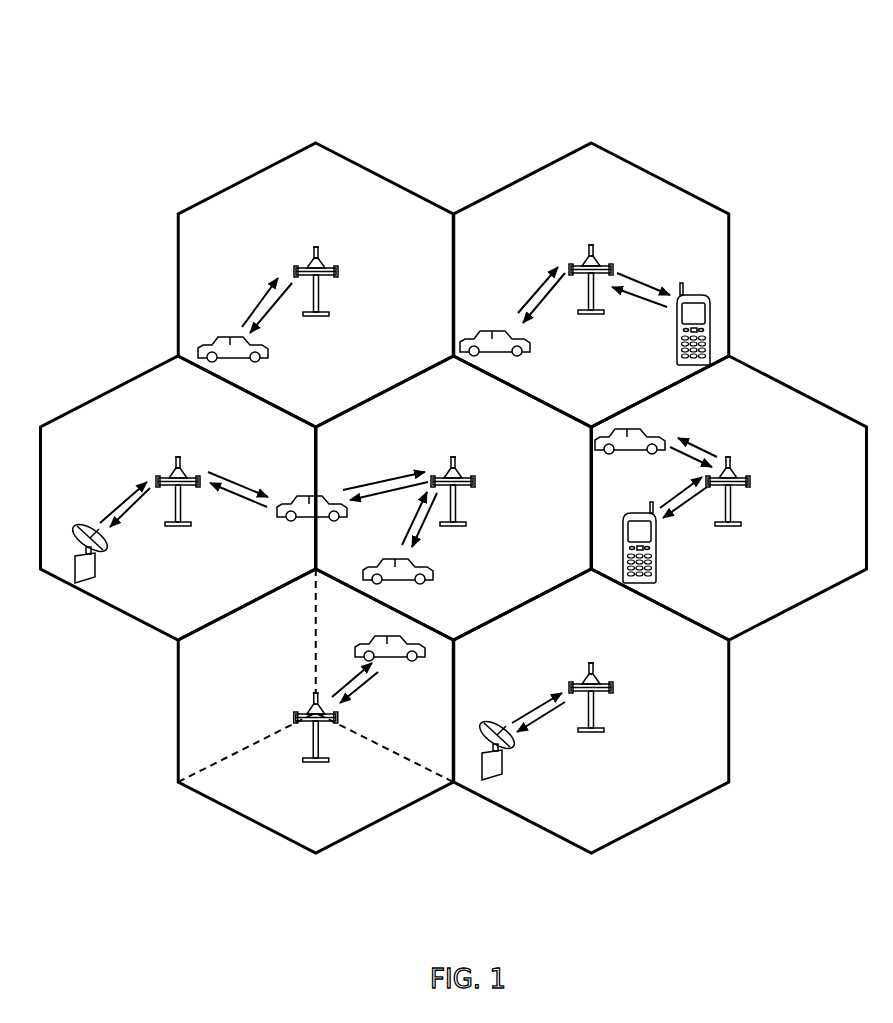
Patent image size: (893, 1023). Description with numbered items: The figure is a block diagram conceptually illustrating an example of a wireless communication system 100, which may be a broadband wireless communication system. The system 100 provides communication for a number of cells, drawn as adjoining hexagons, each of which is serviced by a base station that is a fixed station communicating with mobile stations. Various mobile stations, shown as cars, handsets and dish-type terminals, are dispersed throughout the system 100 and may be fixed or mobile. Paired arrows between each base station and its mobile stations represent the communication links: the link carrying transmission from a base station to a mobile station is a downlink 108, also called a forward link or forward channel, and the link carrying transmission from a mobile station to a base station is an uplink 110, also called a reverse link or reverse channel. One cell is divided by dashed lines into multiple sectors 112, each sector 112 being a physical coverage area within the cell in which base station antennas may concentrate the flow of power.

The wireless communication system 100 is at (737, 78).
The downlink 108 is at (266, 313).
The uplink 110 is at (262, 300).
The sector 112 is at (365, 813).